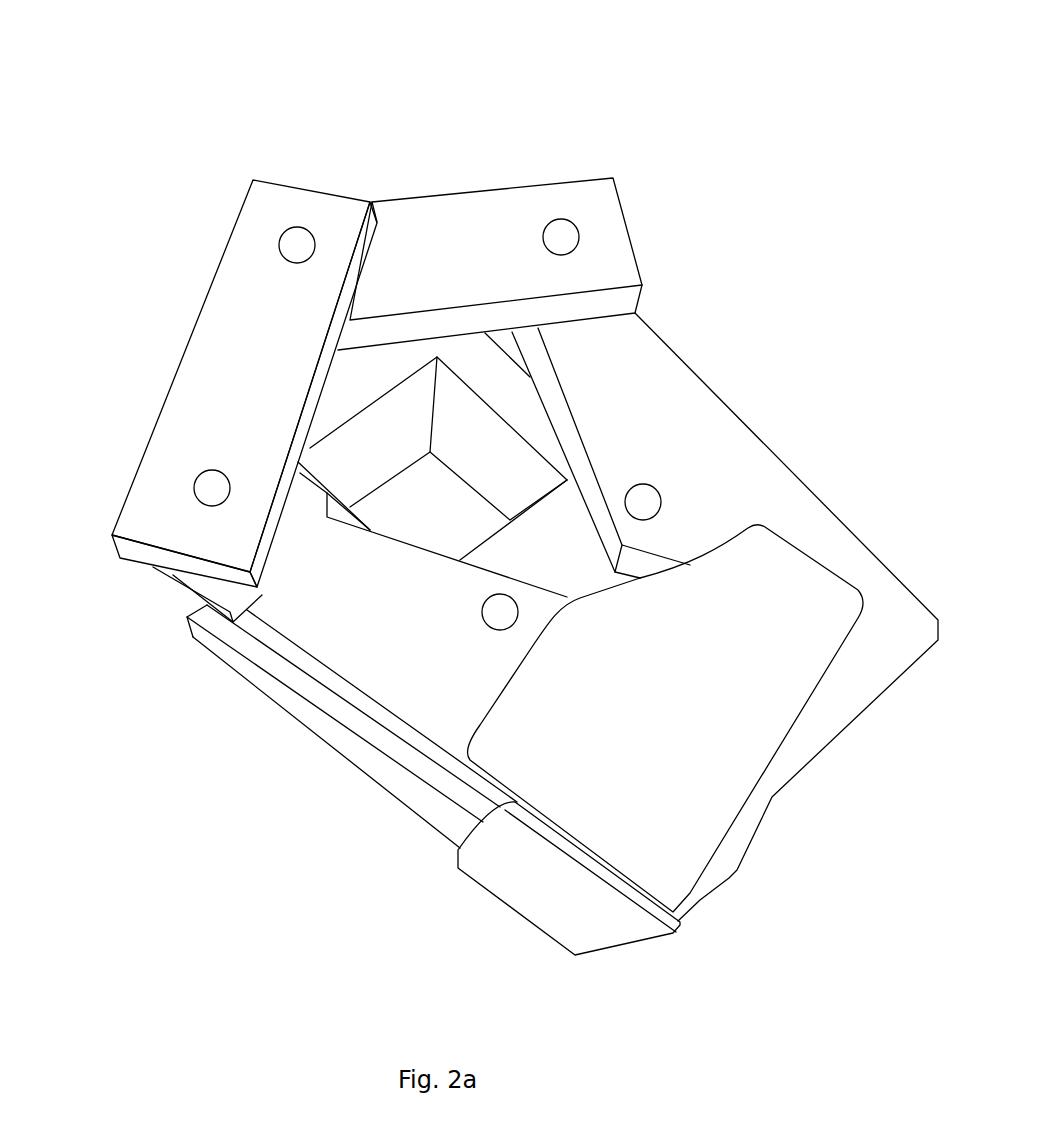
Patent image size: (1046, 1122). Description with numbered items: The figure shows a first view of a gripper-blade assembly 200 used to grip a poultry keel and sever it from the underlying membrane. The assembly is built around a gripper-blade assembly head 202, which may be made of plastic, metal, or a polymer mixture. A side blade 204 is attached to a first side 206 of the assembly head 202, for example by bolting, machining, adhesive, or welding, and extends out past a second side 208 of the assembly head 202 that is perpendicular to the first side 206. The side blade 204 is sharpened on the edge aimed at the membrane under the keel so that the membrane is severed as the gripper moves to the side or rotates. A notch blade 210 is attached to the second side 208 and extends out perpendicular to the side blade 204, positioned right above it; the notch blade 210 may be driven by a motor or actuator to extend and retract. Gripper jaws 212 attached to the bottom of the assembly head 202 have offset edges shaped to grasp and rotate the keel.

The gripper-blade assembly 200 is at (145, 83).
The gripper-blade assembly head 202 is at (281, 786).
The side blade 204 is at (548, 915).
The first side 206 is at (373, 705).
The second side 208 is at (375, 783).
The notch blade 210 is at (736, 755).
The gripper jaws 212 is at (806, 734).